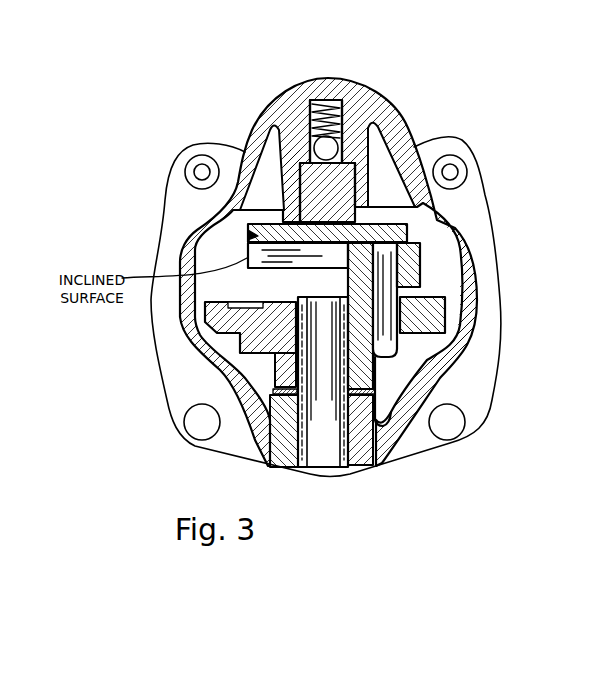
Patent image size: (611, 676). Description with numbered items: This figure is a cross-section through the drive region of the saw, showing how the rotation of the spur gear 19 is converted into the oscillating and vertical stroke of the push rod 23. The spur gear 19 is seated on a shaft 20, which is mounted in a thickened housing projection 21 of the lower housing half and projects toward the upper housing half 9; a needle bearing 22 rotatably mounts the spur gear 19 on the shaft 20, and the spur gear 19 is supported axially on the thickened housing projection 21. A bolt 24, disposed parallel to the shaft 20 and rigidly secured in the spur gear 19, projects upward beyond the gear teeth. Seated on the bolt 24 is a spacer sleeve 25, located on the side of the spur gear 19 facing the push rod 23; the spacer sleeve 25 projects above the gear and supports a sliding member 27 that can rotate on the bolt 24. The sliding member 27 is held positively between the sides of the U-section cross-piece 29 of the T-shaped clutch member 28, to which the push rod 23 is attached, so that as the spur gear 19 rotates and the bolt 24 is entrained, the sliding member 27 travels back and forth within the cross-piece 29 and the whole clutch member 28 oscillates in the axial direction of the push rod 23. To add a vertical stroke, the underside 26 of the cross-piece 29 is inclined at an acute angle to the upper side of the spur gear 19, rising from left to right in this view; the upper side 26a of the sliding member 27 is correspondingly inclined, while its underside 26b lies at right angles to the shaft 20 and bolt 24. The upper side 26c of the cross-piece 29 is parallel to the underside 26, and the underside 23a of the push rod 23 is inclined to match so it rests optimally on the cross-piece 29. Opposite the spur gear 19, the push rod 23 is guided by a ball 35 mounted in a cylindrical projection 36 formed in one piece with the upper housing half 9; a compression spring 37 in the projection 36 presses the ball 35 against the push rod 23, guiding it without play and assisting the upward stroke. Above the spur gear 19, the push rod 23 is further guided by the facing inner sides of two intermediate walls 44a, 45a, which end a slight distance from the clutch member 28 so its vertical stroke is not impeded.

The upper housing half 9 is at (467, 229).
The spur gear 19 is at (473, 308).
The shaft 20 is at (336, 450).
The thickened housing projection 21 is at (385, 460).
The needle bearing 22 is at (265, 383).
The push rod 23 is at (372, 136).
The underside of the push rod 23a is at (362, 237).
The bolt 24 is at (432, 253).
The spacer sleeve 25 is at (467, 338).
The underside of the cross-piece 26 is at (330, 225).
The upper side of the sliding member 26a is at (435, 246).
The underside of the sliding member 26b is at (463, 290).
The upper side of the cross-piece 26c is at (287, 177).
The sliding member 27 is at (440, 303).
The clutch member 28 is at (445, 178).
The cross-piece 29 is at (258, 240).
The ball 35 is at (360, 97).
The cylindrical projection 36 is at (398, 143).
The compression spring 37 is at (303, 97).
The intermediate wall 44a is at (428, 166).
The intermediate wall 45a is at (262, 212).